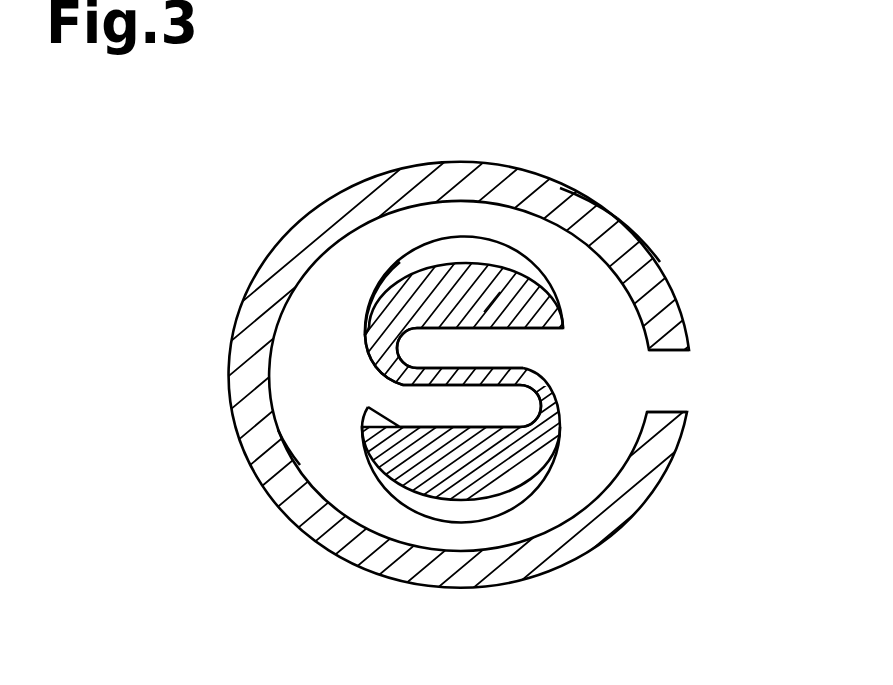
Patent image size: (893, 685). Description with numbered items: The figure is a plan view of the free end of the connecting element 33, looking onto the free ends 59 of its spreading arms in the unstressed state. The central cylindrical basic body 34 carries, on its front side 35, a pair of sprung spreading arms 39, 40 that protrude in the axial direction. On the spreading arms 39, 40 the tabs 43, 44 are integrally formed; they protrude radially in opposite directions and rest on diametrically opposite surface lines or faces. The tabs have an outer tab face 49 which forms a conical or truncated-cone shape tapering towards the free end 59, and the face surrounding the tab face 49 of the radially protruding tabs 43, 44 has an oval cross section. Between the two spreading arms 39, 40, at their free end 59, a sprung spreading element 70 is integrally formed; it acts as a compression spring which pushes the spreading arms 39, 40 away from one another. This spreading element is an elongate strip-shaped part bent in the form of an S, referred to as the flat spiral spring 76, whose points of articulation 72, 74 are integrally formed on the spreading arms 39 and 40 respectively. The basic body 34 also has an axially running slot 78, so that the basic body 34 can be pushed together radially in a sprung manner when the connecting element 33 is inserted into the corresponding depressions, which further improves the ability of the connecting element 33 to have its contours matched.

The connecting element 33 is at (477, 342).
The basic body 34 is at (633, 227).
The front side 35 is at (598, 210).
The spreading arm 39 is at (500, 331).
The spreading arm 40 is at (367, 408).
The tab 43 is at (420, 278).
The tab 44 is at (410, 480).
The tab face 49 is at (483, 247).
The free end 59 is at (493, 297).
The sprung spreading element 70 is at (333, 403).
The point of articulation 72 is at (363, 333).
The point of articulation 74 is at (542, 412).
The flat spiral spring 76 is at (367, 361).
The slot 78 is at (670, 375).